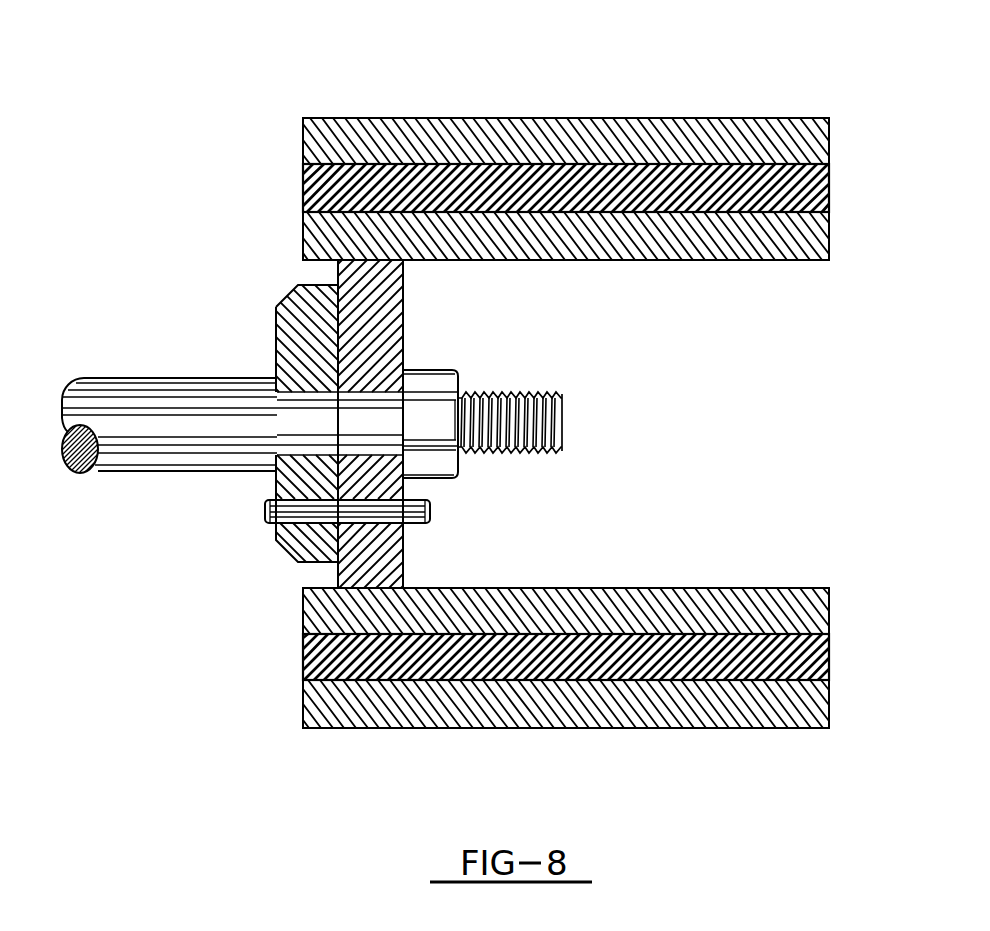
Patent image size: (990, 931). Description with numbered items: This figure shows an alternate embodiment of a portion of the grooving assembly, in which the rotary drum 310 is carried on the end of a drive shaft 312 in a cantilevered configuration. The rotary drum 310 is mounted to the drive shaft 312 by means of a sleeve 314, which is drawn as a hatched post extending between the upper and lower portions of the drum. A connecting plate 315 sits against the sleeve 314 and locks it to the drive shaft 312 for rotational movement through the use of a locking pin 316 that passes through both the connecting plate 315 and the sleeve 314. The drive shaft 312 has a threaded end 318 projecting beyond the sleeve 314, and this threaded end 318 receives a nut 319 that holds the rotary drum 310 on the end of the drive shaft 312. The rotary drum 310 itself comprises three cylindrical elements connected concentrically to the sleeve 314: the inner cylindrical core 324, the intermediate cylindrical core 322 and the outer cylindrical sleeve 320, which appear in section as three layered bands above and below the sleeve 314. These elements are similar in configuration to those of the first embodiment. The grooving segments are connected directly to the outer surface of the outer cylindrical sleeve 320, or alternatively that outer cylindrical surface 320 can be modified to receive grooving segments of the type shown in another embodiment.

The rotary drum 310 is at (907, 10).
The drive shaft 312 is at (160, 455).
The sleeve 314 is at (385, 318).
The connecting plate 315 is at (293, 322).
The locking pin 316 is at (415, 512).
The threaded end 318 is at (563, 425).
The nut 319 is at (445, 387).
The outer cylindrical sleeve 320 is at (815, 143).
The intermediate cylindrical core 322 is at (830, 186).
The inner cylindrical core 324 is at (820, 236).